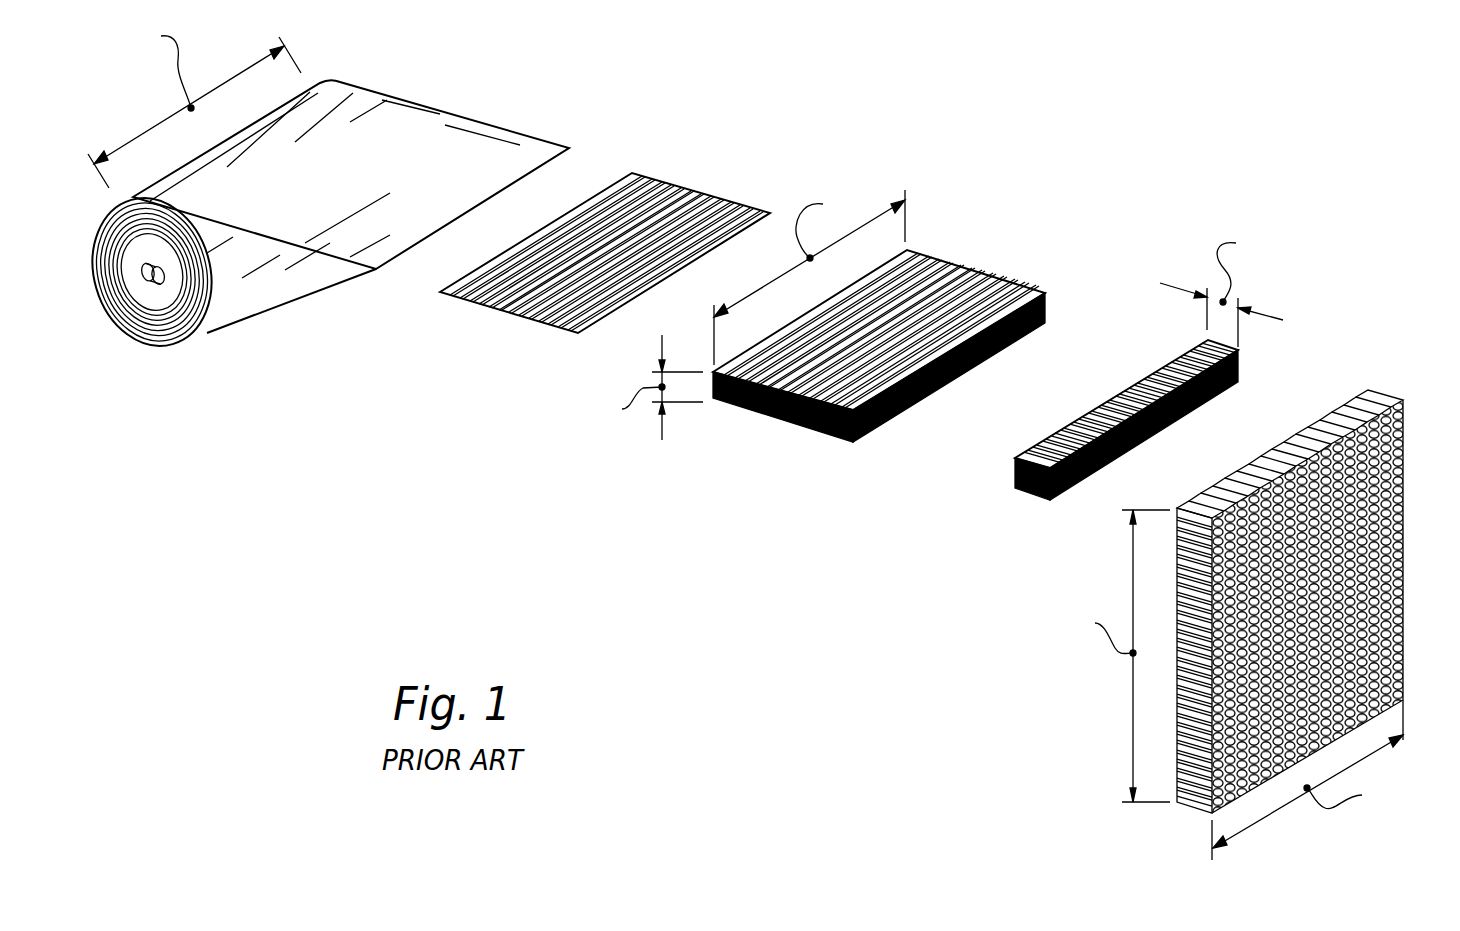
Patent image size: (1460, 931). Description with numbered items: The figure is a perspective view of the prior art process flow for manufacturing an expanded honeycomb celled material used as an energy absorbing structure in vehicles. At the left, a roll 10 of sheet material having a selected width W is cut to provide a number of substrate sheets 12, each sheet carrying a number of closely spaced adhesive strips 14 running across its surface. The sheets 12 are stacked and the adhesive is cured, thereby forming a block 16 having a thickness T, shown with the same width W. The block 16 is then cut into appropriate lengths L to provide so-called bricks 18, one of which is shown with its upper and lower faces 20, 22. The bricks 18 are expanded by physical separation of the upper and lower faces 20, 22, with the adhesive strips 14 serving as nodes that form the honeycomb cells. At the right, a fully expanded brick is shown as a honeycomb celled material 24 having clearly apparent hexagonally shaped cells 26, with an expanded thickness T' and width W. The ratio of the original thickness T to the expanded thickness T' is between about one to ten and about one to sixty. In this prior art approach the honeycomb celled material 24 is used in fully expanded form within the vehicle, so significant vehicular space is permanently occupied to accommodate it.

The roll 10 is at (253, 339).
The substrate sheets 12 is at (530, 333).
The adhesive strips 14 is at (617, 232).
The block 16 is at (795, 430).
The bricks 18 is at (1020, 503).
The upper face 20 is at (1113, 397).
The lower face 22 is at (1203, 407).
The honeycomb celled material 24 is at (1382, 377).
The hexagonally shaped cells 26 is at (1303, 578).